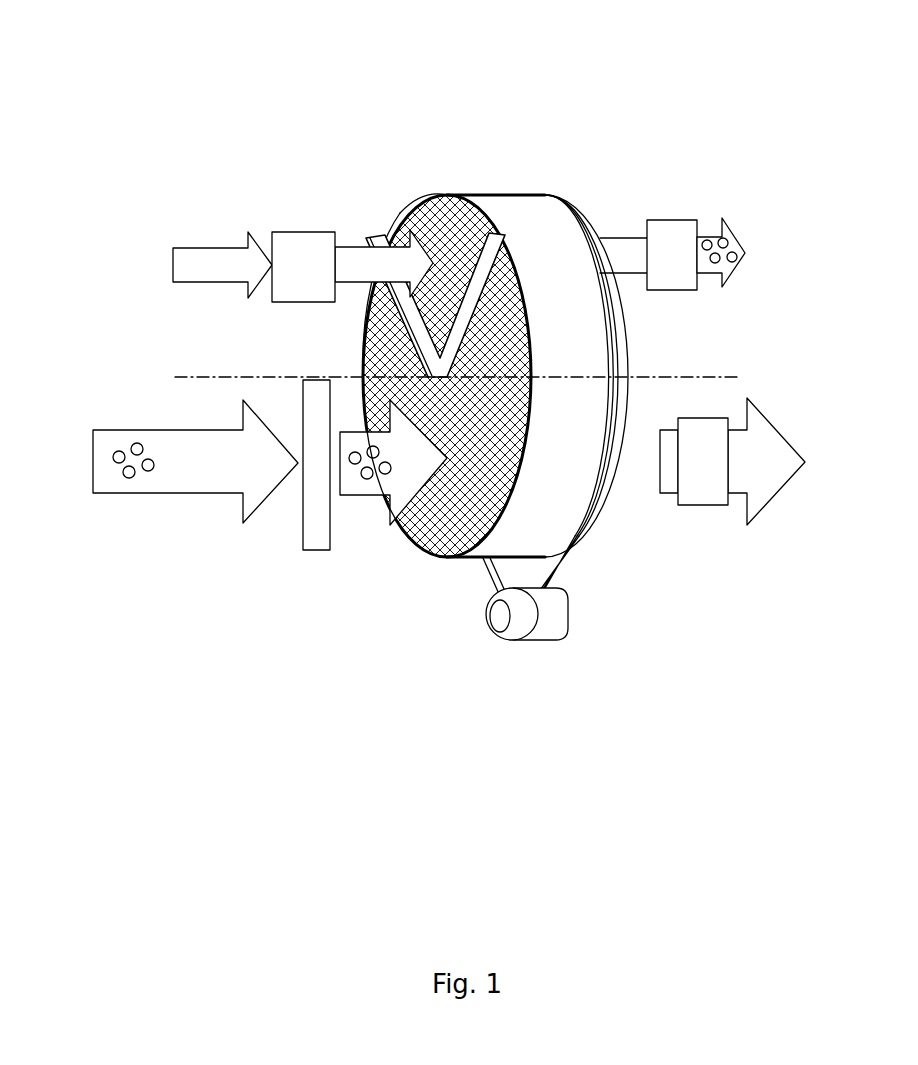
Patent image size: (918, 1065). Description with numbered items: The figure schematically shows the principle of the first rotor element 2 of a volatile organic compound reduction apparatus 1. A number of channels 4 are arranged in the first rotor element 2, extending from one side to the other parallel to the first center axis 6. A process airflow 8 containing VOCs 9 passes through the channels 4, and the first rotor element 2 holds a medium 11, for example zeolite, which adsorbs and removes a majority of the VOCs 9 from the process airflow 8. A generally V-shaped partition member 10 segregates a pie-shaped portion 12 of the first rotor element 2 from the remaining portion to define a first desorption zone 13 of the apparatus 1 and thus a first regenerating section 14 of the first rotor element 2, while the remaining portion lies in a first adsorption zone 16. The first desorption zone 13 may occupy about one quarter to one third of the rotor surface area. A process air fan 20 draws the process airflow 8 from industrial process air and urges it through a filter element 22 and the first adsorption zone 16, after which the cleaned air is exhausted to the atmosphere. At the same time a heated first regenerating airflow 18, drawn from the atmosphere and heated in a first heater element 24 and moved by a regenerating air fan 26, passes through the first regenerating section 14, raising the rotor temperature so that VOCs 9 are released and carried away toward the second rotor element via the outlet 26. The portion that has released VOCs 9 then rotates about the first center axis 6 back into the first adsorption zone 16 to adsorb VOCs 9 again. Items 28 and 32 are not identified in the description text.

The volatile organic compound reduction apparatus 1 is at (577, 145).
The first rotor element 2 is at (490, 193).
The channels 4 is at (412, 217).
The first center axis 6 is at (200, 377).
The process airflow 8 is at (177, 497).
The VOCs 9 is at (130, 477).
The partition member 10 is at (368, 237).
The medium 11 is at (378, 360).
The pie-shaped portion 12 is at (368, 177).
The first desorption zone 13 is at (397, 185).
The first regenerating section 14 is at (447, 247).
The first adsorption zone 16 is at (392, 560).
The first regenerating airflow 18 is at (217, 248).
The process air fan 20 is at (700, 505).
The filter element 22 is at (318, 550).
The first heater element 24 is at (288, 232).
The regenerating air fan 26 is at (673, 220).
The exhaust outlet 28 is at (728, 238).
The drive motor 32 is at (567, 632).